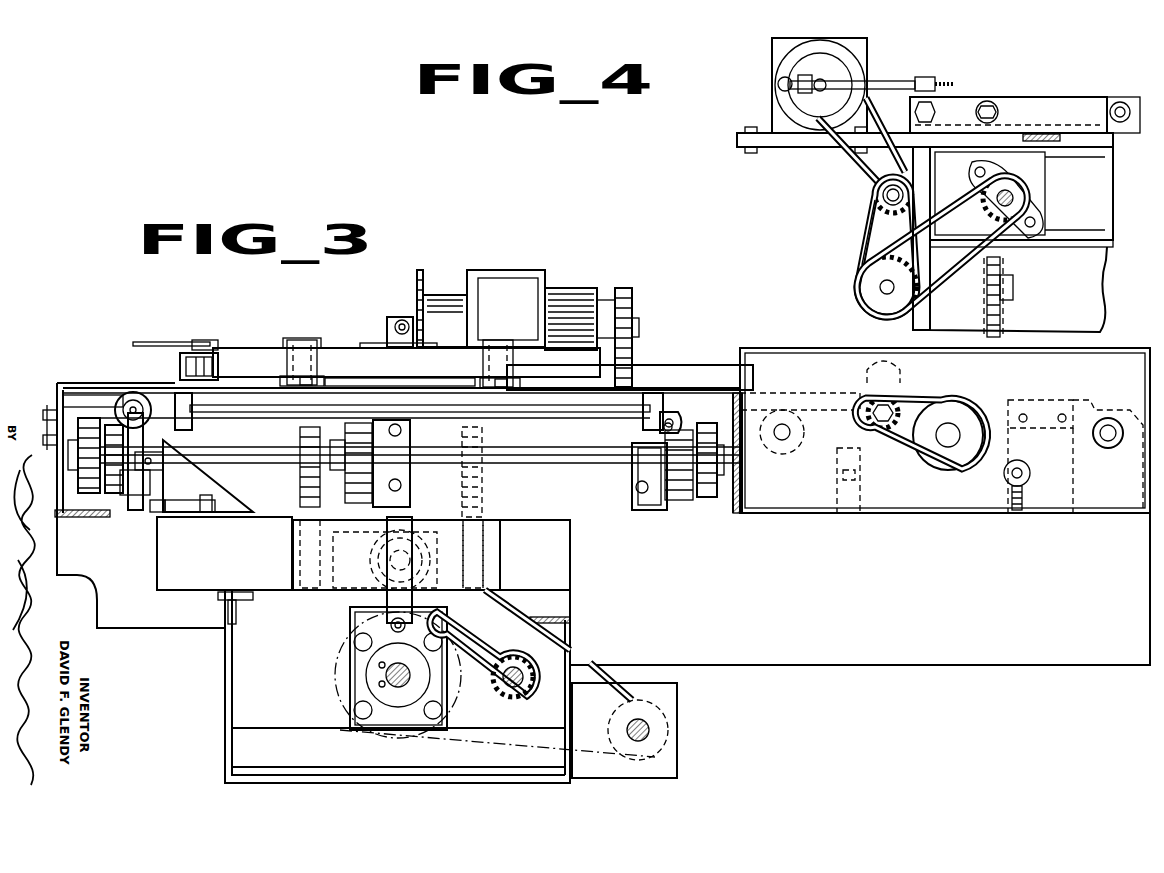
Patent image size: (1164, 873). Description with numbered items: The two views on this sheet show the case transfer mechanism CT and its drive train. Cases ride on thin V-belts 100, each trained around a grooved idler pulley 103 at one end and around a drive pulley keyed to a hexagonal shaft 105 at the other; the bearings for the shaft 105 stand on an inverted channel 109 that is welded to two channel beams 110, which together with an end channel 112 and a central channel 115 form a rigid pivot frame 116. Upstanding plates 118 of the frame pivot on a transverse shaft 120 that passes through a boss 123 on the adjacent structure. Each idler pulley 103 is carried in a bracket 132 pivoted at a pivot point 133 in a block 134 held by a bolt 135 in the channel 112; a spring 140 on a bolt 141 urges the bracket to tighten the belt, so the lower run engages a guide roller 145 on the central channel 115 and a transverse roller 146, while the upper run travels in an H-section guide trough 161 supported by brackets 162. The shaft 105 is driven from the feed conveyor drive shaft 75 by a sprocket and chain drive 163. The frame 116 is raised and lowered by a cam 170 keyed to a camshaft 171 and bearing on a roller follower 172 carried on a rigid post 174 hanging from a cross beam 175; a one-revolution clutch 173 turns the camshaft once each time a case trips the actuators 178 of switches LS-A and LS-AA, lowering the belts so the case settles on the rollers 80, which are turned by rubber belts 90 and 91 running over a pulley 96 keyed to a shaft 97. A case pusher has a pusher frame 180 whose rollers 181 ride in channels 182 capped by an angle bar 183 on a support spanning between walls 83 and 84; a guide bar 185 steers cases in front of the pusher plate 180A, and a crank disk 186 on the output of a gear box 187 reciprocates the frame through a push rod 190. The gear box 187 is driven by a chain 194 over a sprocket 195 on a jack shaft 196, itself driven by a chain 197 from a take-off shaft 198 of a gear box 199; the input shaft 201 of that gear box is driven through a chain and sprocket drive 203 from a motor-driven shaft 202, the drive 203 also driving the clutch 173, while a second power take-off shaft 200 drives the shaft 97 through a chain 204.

In FIG. 3, the drive shaft 75 is at (948, 440).
In FIG. 3, the rollers 80 is at (62, 385).
In FIG. 3, the wall 83 is at (92, 495).
In FIG. 3, the wall 84 is at (738, 500).
In FIG. 3, the rubber belt 90 is at (57, 400).
In FIG. 4, the rubber belt 91 is at (1095, 160).
In FIG. 3, the rubber belt 91 is at (707, 425).
In FIG. 3, the pulley 96 is at (112, 495).
In FIG. 4, the shaft 97 is at (1012, 200).
In FIG. 3, the shaft 97 is at (576, 462).
In FIG. 3, the V-belts 100 is at (160, 388).
In FIG. 3, the grooved idler pulley 103 is at (110, 392).
In FIG. 3, the hexagonal shaft 105 is at (890, 406).
In FIG. 3, the inverted channel 109 is at (837, 482).
In FIG. 3, the channel beams 110 is at (200, 588).
In FIG. 3, the end channel 112 is at (158, 512).
In FIG. 3, the central channel 115 is at (640, 488).
In FIG. 3, the pivot frame 116 is at (157, 592).
In FIG. 3, the upstanding plates 118 is at (1073, 447).
In FIG. 3, the transverse shaft 120 is at (1108, 418).
In FIG. 3, the boss 123 is at (1105, 448).
In FIG. 3, the bracket 132 is at (140, 507).
In FIG. 3, the pivot point 133 is at (225, 505).
In FIG. 3, the block 134 is at (130, 505).
In FIG. 3, the bolt 135 is at (152, 462).
In FIG. 3, the spring 140 is at (190, 512).
In FIG. 3, the bolt 141 is at (210, 512).
In FIG. 3, the guide roller 145 is at (668, 412).
In FIG. 3, the transverse roller 146 is at (790, 455).
In FIG. 3, the guide trough 161 is at (335, 395).
In FIG. 3, the brackets 162 is at (183, 400).
In FIG. 3, the sprocket and chain drive 163 is at (978, 397).
In FIG. 3, the cam 170 is at (365, 662).
In FIG. 3, the camshaft 171 is at (390, 675).
In FIG. 3, the roller follower 172 is at (385, 622).
In FIG. 3, the one-revolution electrically operated clutch 173 is at (338, 702).
In FIG. 3, the rigid post 174 is at (382, 570).
In FIG. 3, the cross beam 175 is at (428, 512).
In FIG. 3, the actuators 178 is at (160, 342).
In FIG. 4, the pusher frame 180 is at (1135, 97).
In FIG. 3, the pusher frame 180 is at (300, 338).
In FIG. 3, the pusher plate 180A is at (437, 373).
In FIG. 4, the rollers 181 is at (1000, 112).
In FIG. 3, the rollers 181 is at (305, 345).
In FIG. 3, the channels 182 is at (300, 385).
In FIG. 4, the angle bar 183 is at (968, 97).
In FIG. 3, the angle bar 183 is at (288, 345).
In FIG. 3, the guide bar 185 is at (700, 365).
In FIG. 4, the crank disk 186 is at (790, 58).
In FIG. 3, the crank disk 186 is at (423, 272).
In FIG. 4, the gear box 187 is at (862, 50).
In FIG. 3, the gear box 187 is at (520, 272).
In FIG. 4, the push rod 190 is at (884, 80).
In FIG. 3, the push rod 190 is at (400, 318).
In FIG. 4, the chain 194 is at (845, 165).
In FIG. 3, the chain 194 is at (630, 305).
In FIG. 4, the sprocket 195 is at (880, 186).
In FIG. 4, the jack shaft 196 is at (886, 196).
In FIG. 4, the chain 197 is at (862, 235).
In FIG. 3, the chain 197 is at (482, 437).
In FIG. 3, the take-off shaft 198 is at (462, 596).
In FIG. 4, the gear box 199 is at (858, 266).
In FIG. 3, the gear box 199 is at (488, 533).
In FIG. 4, the second power take-off shaft 200 is at (882, 287).
In FIG. 3, the second power take-off shaft 200 is at (332, 598).
In FIG. 4, the input shaft 201 is at (1008, 288).
In FIG. 3, the input shaft 201 is at (382, 553).
In FIG. 3, the shaft 202 is at (650, 727).
In FIG. 4, the chain and sprocket drive 203 is at (1000, 315).
In FIG. 3, the chain and sprocket drive 203 is at (530, 607).
In FIG. 3, the chain 204 is at (300, 470).
In FIG. 3, the case transfer mechanism CT is at (145, 387).
In FIG. 3, the switch LS-A is at (445, 340).
In FIG. 3, the switch LS-AA is at (210, 350).